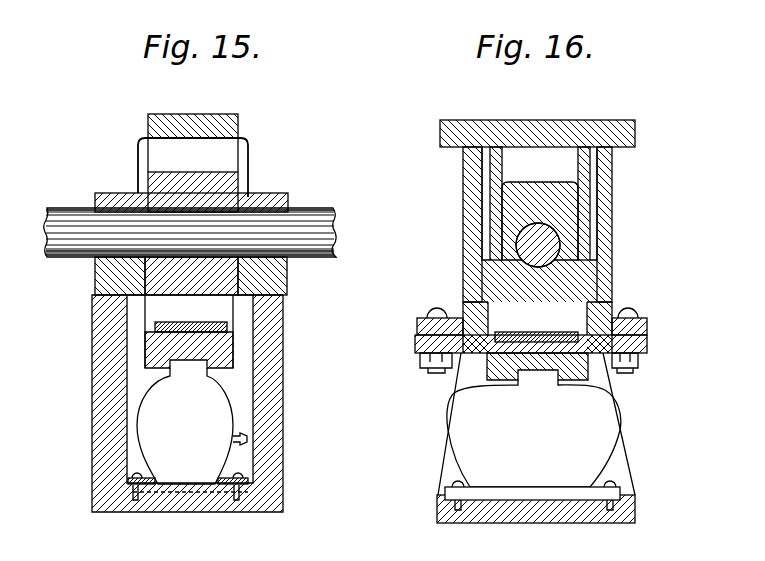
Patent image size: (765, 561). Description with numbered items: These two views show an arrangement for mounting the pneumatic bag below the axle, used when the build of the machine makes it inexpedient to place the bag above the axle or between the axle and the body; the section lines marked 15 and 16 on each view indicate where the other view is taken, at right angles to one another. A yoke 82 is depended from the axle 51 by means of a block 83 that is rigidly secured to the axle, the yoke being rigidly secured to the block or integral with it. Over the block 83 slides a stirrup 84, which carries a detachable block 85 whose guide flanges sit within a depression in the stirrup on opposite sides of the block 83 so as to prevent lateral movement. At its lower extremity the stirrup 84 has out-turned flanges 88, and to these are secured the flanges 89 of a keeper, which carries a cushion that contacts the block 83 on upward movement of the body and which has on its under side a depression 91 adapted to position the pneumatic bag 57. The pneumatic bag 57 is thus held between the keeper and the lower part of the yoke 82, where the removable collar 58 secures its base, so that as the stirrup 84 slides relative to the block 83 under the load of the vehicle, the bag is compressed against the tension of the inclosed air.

In FIG. 16, the section line / top cap plate 15 is at (537, 323).
In FIG. 15, the section line / top block 16 is at (230, 113).
In FIG. 15, the axle 51 is at (336, 232).
In FIG. 16, the axle 51 is at (554, 233).
In FIG. 15, the pneumatic bag 57 is at (192, 426).
In FIG. 16, the pneumatic bag 57 is at (534, 433).
In FIG. 15, the collar 58 is at (254, 478).
In FIG. 16, the collar 58 is at (621, 493).
In FIG. 15, the yoke 82 is at (205, 384).
In FIG. 16, the yoke 82 is at (608, 472).
In FIG. 15, the block 83 is at (249, 197).
In FIG. 16, the block 83 is at (482, 280).
In FIG. 15, the stirrup 84 is at (157, 307).
In FIG. 16, the stirrup 84 is at (482, 240).
In FIG. 15, the detachable block 85 is at (248, 163).
In FIG. 16, the detachable block 85 is at (580, 163).
In FIG. 16, the out-turned flanges 88 is at (417, 320).
In FIG. 16, the flanges 89 is at (423, 340).
In FIG. 16, the depression 91 is at (486, 365).